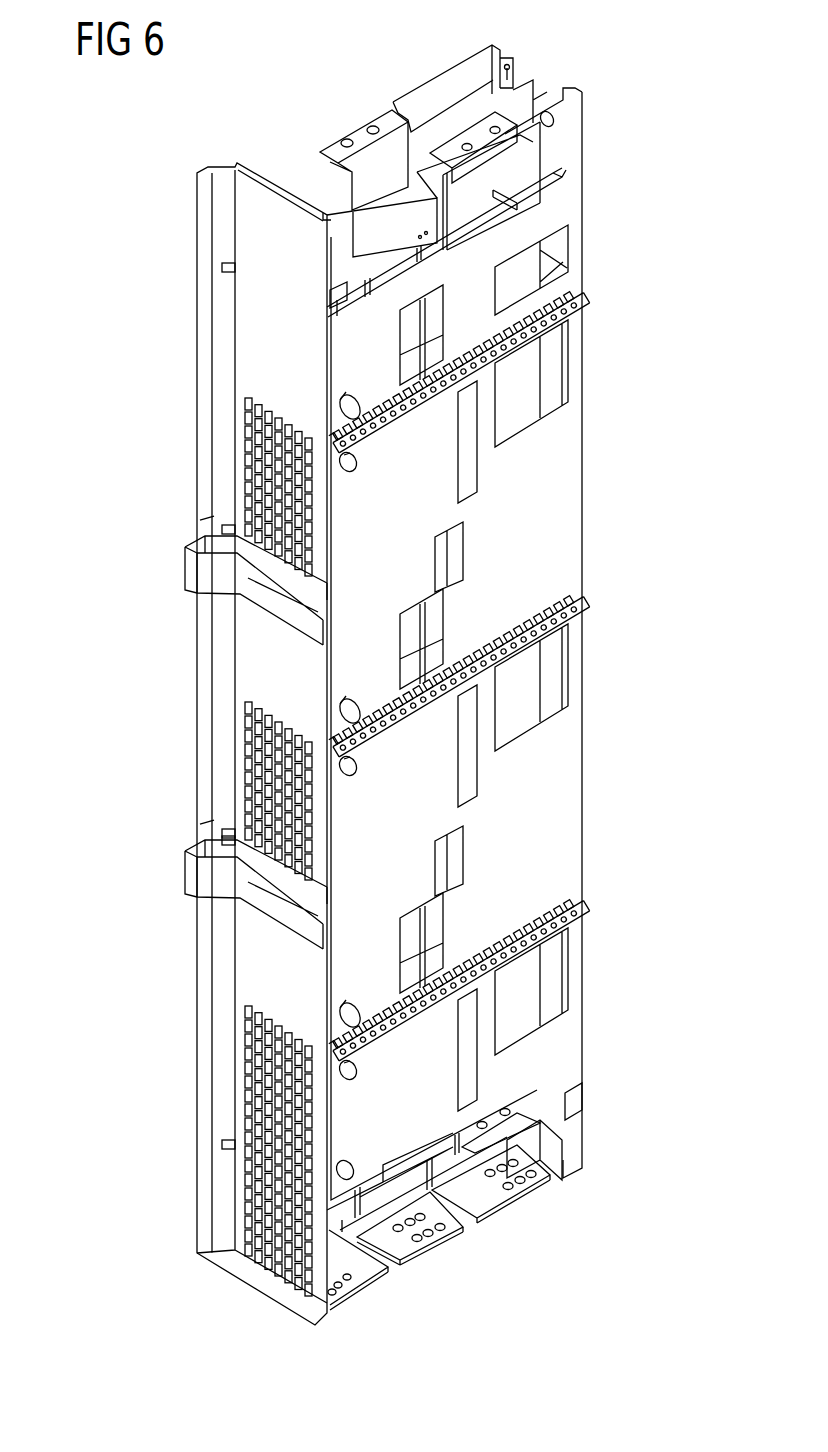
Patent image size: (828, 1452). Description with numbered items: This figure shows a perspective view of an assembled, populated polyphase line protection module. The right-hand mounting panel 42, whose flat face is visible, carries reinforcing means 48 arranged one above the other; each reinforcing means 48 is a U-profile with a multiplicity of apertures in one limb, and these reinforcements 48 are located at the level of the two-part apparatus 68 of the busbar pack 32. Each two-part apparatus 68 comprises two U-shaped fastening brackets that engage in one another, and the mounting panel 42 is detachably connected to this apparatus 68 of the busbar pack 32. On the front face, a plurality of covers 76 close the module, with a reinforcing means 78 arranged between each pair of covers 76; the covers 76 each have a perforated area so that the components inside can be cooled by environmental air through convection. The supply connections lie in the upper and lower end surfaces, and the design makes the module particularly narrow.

The busbar pack 32 is at (513, 272).
The mounting panel 42 is at (513, 478).
The reinforcing means 48 is at (513, 353).
The two-part apparatus 68 is at (430, 360).
The cover 76 is at (262, 332).
The reinforcing means 78 is at (185, 577).